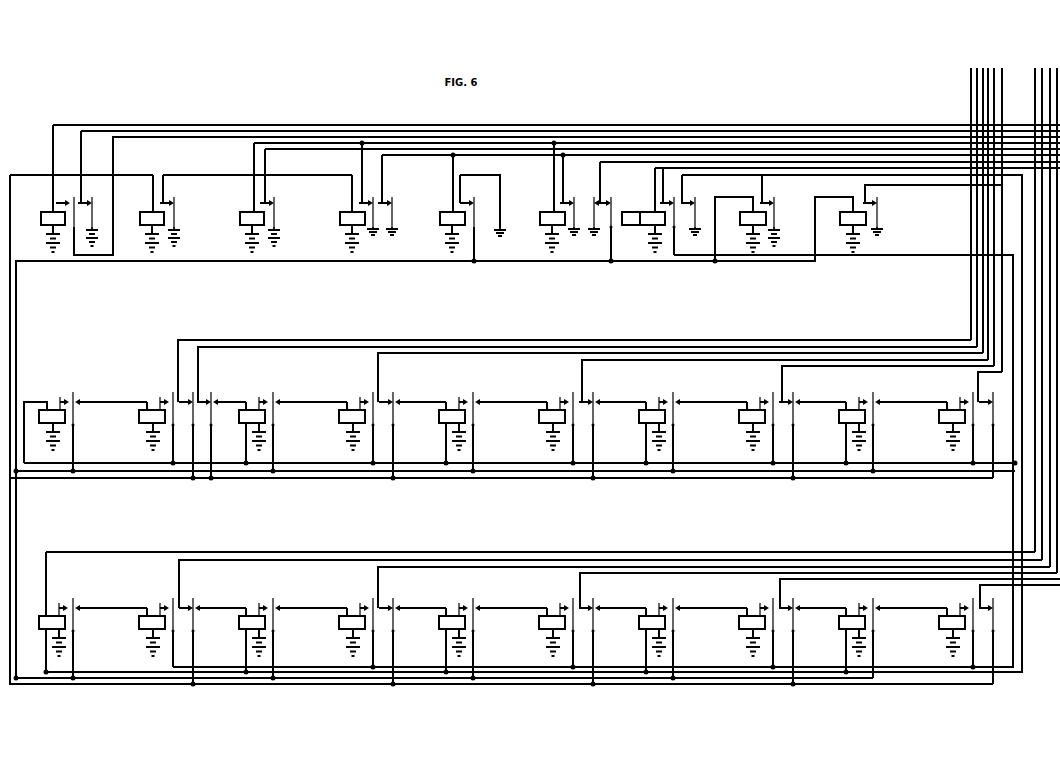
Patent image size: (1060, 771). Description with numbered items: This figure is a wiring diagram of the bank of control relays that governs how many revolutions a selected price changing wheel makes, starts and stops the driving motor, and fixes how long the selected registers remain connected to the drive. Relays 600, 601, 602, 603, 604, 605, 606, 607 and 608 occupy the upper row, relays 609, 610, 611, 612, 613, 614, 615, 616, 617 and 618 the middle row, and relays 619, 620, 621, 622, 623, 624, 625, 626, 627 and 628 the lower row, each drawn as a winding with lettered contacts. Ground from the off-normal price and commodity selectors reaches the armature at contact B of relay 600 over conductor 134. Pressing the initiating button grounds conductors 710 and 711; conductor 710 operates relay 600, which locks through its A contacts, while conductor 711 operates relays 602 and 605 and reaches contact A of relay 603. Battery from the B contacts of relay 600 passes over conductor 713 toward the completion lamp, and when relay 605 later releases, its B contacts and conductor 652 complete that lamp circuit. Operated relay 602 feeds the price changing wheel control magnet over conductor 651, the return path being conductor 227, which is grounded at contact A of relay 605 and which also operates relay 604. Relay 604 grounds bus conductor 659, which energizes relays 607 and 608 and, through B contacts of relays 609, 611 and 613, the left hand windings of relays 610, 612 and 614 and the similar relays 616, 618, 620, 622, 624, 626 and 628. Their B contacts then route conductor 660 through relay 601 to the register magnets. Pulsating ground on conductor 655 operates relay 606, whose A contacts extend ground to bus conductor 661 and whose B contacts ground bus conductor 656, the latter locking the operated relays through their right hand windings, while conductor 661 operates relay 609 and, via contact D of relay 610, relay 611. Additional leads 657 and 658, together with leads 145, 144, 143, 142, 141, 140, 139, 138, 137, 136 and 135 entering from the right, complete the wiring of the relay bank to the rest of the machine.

The relay 600 is at (71, 188).
The relay 601 is at (160, 213).
The relay 602 is at (260, 197).
The relay 603 is at (369, 213).
The relay 604 is at (458, 209).
The relay 605 is at (578, 203).
The relay 606 is at (661, 211).
The relay 607 is at (747, 223).
The relay 608 is at (862, 217).
The relay 609 is at (55, 428).
The relay 610 is at (148, 431).
The relay 611 is at (249, 428).
The relay 612 is at (340, 431).
The relay 613 is at (440, 428).
The relay 614 is at (540, 431).
The relay 615 is at (640, 428).
The relay 616 is at (740, 431).
The relay 617 is at (840, 428).
The relay 618 is at (940, 430).
The relay 619 is at (537, 616).
The relay 620 is at (140, 637).
The relay 621 is at (240, 634).
The relay 622 is at (340, 637).
The relay 623 is at (440, 634).
The relay 624 is at (540, 637).
The relay 625 is at (640, 634).
The relay 626 is at (740, 637).
The relay 627 is at (840, 633).
The relay 628 is at (940, 636).
The conductor 710 is at (94, 125).
The conductor 713 is at (124, 131).
The conductor 134 is at (163, 137).
The conductor 711 is at (268, 143).
The conductor 651 is at (300, 149).
The conductor 227 is at (392, 155).
The conductor 652 is at (597, 162).
The conductor 655 is at (654, 168).
The bus conductor 656 is at (712, 175).
The lead 657 is at (768, 175).
The lead 658 is at (895, 185).
The bus conductor 659 is at (376, 264).
The conductor 660 is at (12, 286).
The bus conductor 661 is at (879, 257).
The lead 145 is at (193, 341).
The lead 144 is at (250, 347).
The lead 143 is at (390, 353).
The lead 142 is at (590, 360).
The lead 141 is at (784, 366).
The lead 140 is at (977, 370).
The lead 139 is at (207, 559).
The lead 138 is at (392, 567).
The lead 137 is at (588, 573).
The lead 136 is at (790, 579).
The lead 135 is at (992, 585).